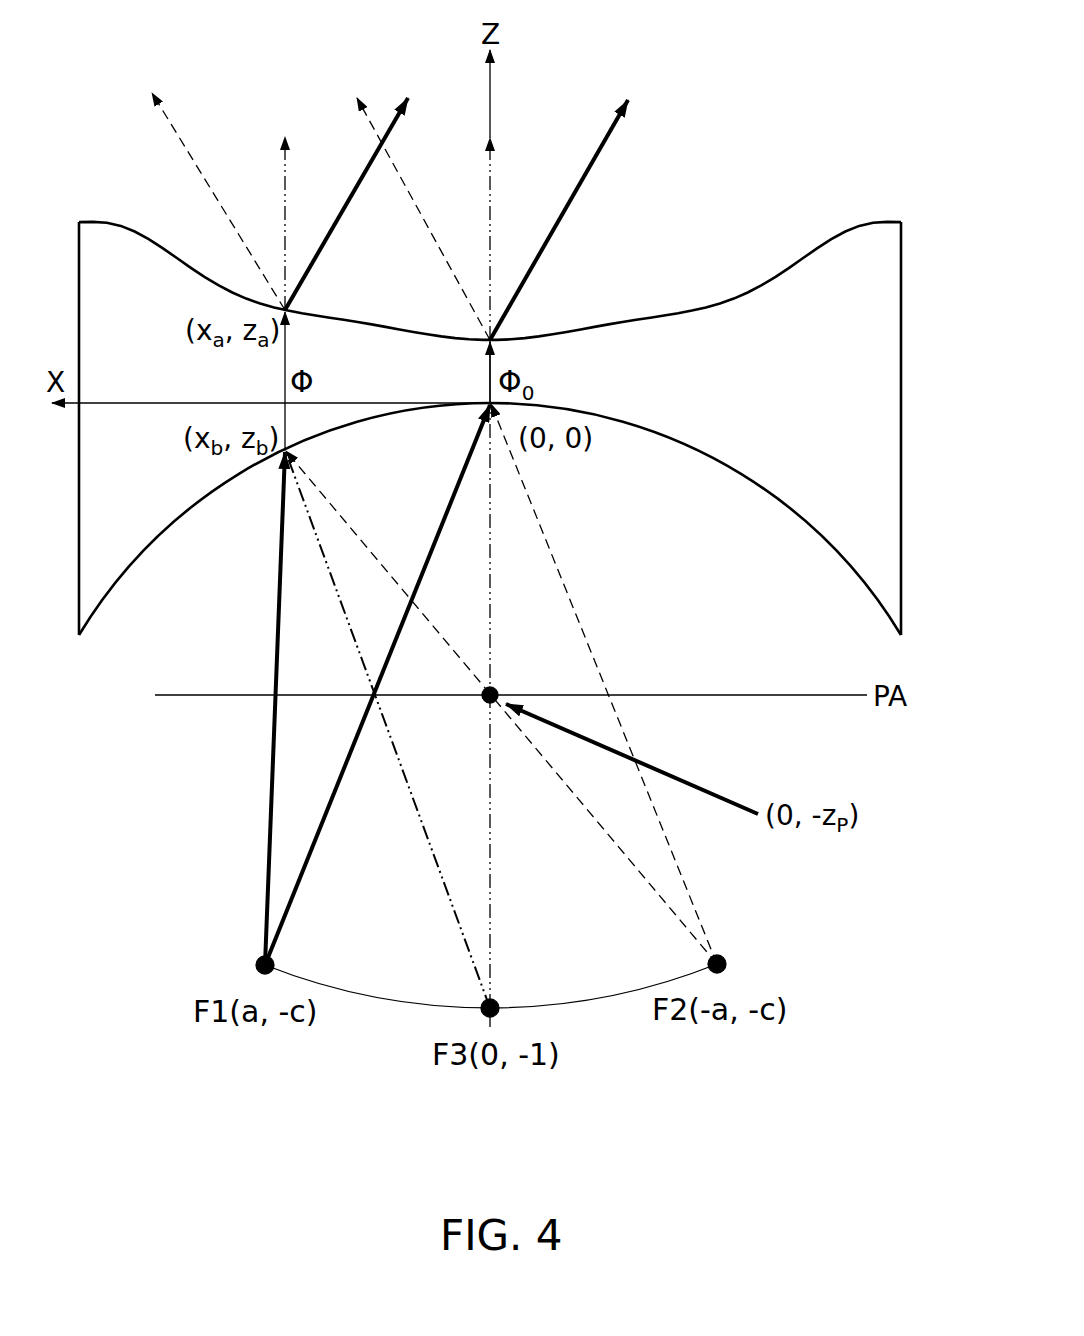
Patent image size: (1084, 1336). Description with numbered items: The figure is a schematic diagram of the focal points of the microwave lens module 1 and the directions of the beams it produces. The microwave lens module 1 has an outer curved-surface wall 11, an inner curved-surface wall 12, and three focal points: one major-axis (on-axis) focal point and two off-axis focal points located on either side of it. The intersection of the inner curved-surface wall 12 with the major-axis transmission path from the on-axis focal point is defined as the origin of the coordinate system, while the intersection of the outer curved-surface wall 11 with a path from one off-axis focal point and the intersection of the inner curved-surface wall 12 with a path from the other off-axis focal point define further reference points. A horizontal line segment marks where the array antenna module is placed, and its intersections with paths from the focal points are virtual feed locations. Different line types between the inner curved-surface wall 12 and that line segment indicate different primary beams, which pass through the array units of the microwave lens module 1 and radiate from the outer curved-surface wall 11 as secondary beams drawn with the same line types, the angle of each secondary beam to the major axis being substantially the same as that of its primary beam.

The microwave lens module 1 is at (520, 404).
The outer curved-surface wall 11 is at (840, 236).
The inner curved-surface wall 12 is at (780, 503).